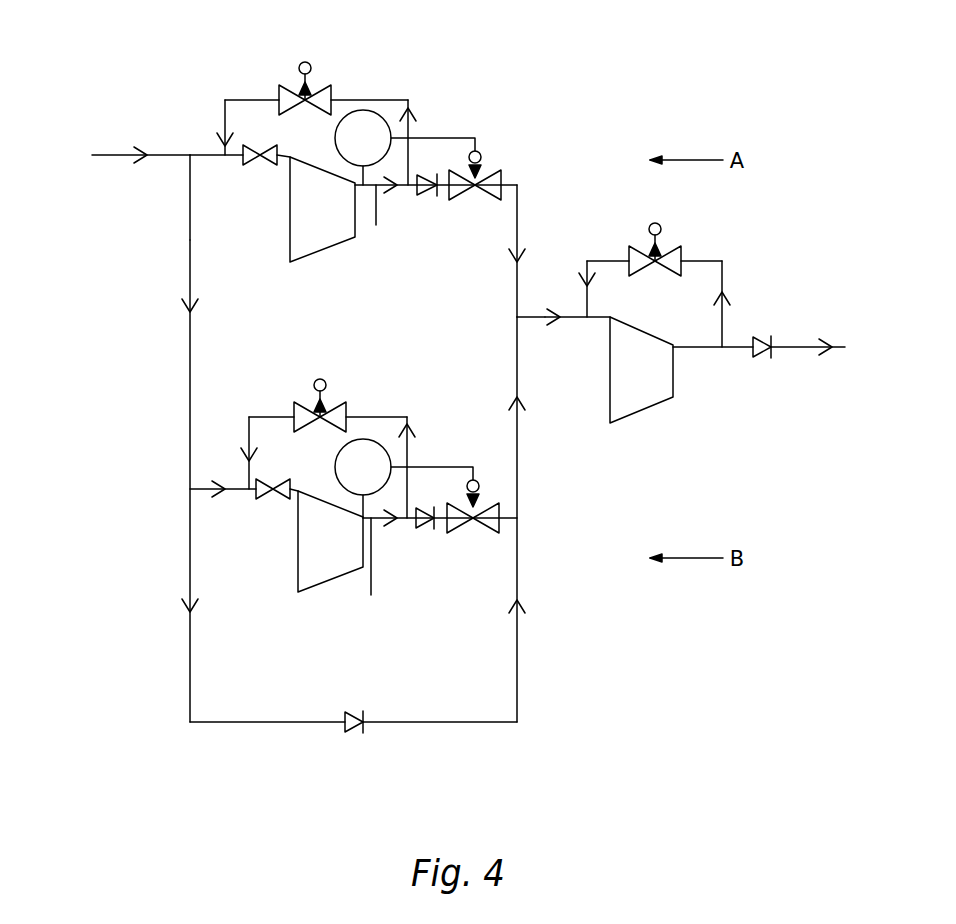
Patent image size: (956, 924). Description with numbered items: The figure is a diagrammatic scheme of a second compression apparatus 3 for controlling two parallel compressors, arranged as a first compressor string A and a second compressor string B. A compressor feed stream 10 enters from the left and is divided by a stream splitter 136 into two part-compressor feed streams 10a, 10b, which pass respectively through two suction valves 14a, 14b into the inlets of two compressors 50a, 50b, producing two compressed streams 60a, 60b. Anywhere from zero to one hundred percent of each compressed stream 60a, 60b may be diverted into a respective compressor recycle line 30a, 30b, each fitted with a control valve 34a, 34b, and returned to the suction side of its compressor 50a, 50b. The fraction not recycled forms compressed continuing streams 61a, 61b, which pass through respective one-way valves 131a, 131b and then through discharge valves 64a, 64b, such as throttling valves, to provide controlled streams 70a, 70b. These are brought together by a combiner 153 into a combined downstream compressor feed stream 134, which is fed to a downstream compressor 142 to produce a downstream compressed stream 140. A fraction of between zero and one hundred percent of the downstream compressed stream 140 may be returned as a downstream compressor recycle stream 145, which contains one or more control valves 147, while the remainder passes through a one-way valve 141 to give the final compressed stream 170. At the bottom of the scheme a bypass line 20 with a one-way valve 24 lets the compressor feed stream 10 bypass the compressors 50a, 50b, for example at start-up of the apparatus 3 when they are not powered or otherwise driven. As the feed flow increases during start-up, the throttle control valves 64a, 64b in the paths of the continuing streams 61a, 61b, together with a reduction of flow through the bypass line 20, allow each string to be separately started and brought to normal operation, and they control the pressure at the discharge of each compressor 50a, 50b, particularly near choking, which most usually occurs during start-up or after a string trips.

The second compression apparatus 3 is at (578, 653).
The compressor feed stream 10 is at (168, 154).
The part-compressor feed stream 10a is at (207, 153).
The part-compressor feed stream 10b is at (192, 340).
The stream splitter 136 is at (205, 172).
The suction valve 14a is at (267, 166).
The suction valve 14b is at (283, 493).
The compressor 50a is at (342, 221).
The compressor 50b is at (350, 552).
The compressed stream 60a is at (436, 216).
The compressed stream 60b is at (434, 568).
The compressor recycle line 30a is at (410, 102).
The compressor recycle line 30b is at (408, 418).
The control valve 34a is at (322, 97).
The control valve 34b is at (340, 405).
The compressed continuing stream 61a is at (495, 120).
The compressed continuing stream 61b is at (407, 532).
The one-way valve 131a is at (424, 196).
The one-way valve 131b is at (425, 508).
The discharge valve 64a is at (488, 188).
The discharge valve 64b is at (490, 522).
The controlled stream 70a is at (519, 205).
The controlled stream 70b is at (519, 480).
The combiner 153 is at (527, 308).
The combined downstream compressor feed stream 134 is at (568, 320).
The downstream compressor 142 is at (662, 386).
The downstream compressor recycle stream 145 is at (723, 272).
The control valve 147 is at (675, 257).
The downstream compressed stream 140 is at (690, 352).
The one-way valve 141 is at (760, 340).
The final compressed stream 170 is at (790, 352).
The bypass line 20 is at (262, 724).
The one-way valve 24 is at (352, 729).